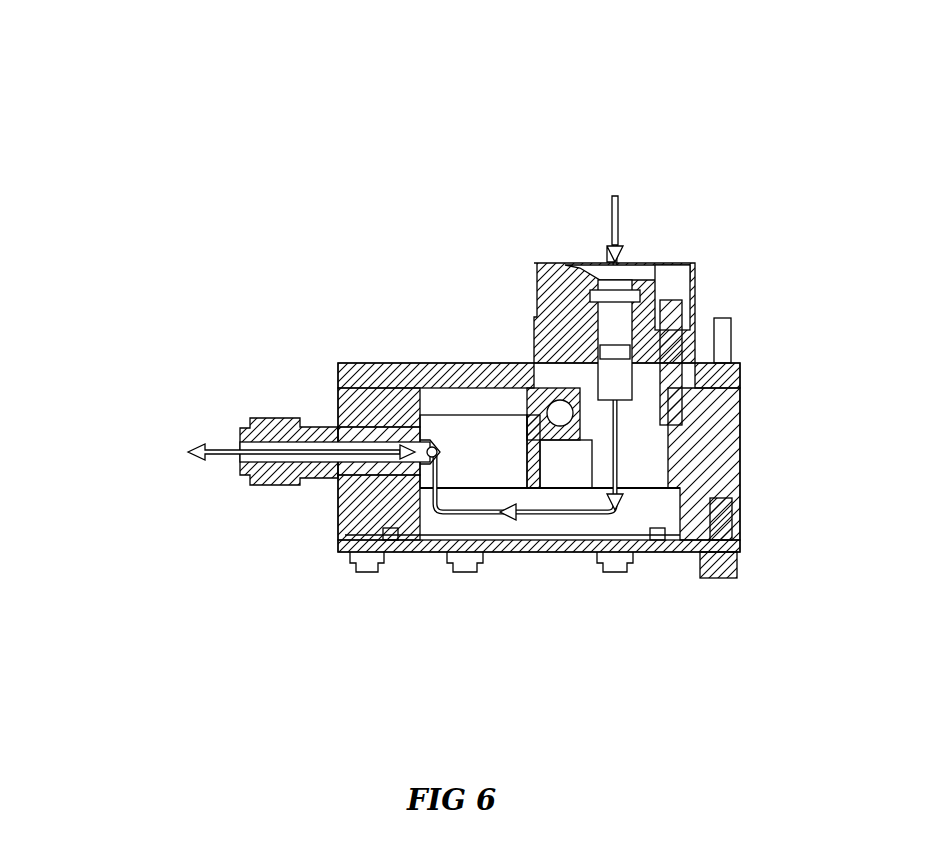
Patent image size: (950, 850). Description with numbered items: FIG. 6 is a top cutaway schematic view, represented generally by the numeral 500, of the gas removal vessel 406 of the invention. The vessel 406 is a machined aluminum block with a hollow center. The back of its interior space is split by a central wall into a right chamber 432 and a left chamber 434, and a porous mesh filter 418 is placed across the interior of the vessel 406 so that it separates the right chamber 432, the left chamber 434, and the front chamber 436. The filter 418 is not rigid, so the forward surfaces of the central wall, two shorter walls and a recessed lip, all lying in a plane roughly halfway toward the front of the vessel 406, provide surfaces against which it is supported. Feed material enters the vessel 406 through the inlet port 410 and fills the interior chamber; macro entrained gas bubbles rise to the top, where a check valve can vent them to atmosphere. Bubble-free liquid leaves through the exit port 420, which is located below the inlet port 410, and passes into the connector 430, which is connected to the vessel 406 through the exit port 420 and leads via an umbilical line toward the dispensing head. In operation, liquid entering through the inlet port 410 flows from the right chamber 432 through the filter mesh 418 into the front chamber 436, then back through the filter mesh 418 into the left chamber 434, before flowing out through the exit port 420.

The top schematic view 500 is at (215, 157).
The gas removal vessel 406 is at (742, 460).
The inlet port 410 is at (558, 262).
The porous mesh filter 418 is at (557, 490).
The exit port 420 is at (348, 540).
The connector 430 is at (245, 485).
The right chamber 432 is at (650, 473).
The left chamber 434 is at (478, 438).
The front chamber 436 is at (607, 527).